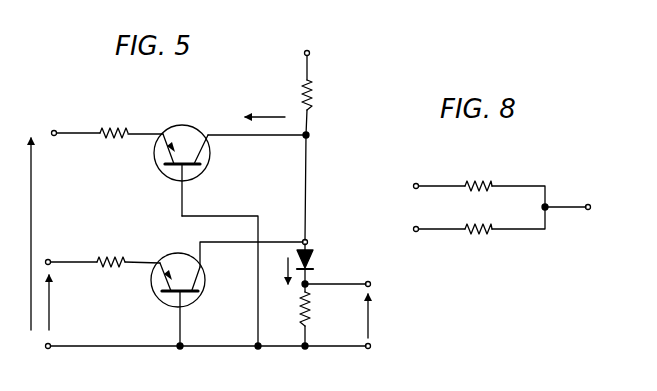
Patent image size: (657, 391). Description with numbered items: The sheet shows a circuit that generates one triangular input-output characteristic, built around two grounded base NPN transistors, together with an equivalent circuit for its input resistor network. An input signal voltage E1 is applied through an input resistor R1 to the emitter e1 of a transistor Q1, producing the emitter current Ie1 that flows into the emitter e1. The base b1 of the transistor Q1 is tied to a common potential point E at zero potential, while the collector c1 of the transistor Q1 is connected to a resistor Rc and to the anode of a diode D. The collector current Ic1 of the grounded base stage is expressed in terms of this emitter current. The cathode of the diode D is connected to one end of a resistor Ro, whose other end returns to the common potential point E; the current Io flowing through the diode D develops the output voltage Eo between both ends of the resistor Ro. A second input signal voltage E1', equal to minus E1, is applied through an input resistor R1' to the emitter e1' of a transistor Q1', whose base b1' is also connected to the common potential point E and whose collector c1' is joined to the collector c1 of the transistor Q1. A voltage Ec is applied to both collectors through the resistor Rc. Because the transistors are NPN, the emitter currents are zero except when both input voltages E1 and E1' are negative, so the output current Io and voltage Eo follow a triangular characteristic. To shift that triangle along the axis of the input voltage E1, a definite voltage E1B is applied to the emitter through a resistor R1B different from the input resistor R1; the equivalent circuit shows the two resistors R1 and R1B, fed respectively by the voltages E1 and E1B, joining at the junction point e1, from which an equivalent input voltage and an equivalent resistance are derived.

In FIG. 5, the emitter current Ie1 is at (97, 115).
In FIG. 5, the input resistor R1 is at (114, 118).
In FIG. 8, the input resistor R1 is at (478, 170).
In FIG. 5, the transistor Q1 is at (191, 162).
In FIG. 5, the emitter e1 is at (159, 136).
In FIG. 8, the emitter e1 is at (579, 208).
In FIG. 5, the collector c1 is at (216, 149).
In FIG. 5, the base b1 is at (200, 190).
In FIG. 5, the collector current Ic1 is at (265, 105).
In FIG. 5, the voltage Ec is at (309, 56).
In FIG. 5, the resistor Rc is at (312, 94).
In FIG. 5, the diode D is at (315, 262).
In FIG. 5, the current Io is at (277, 276).
In FIG. 5, the resistor Ro is at (312, 305).
In FIG. 5, the voltage Eo is at (380, 316).
In FIG. 5, the common potential point E is at (212, 347).
In FIG. 5, the input resistor R1' is at (111, 248).
In FIG. 5, the transistor Q1' is at (191, 291).
In FIG. 5, the emitter e1' is at (159, 263).
In FIG. 5, the collector c1' is at (213, 277).
In FIG. 5, the base b1' is at (204, 318).
In FIG. 5, the input signal voltage E1 is at (18, 234).
In FIG. 8, the input signal voltage E1 is at (427, 187).
In FIG. 5, the input signal voltage E1' is at (90, 302).
In FIG. 8, the definite voltage E1B is at (424, 230).
In FIG. 8, the resistor R1B is at (477, 237).